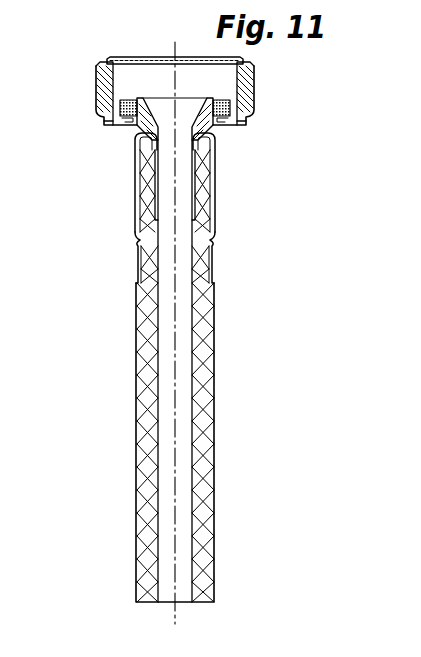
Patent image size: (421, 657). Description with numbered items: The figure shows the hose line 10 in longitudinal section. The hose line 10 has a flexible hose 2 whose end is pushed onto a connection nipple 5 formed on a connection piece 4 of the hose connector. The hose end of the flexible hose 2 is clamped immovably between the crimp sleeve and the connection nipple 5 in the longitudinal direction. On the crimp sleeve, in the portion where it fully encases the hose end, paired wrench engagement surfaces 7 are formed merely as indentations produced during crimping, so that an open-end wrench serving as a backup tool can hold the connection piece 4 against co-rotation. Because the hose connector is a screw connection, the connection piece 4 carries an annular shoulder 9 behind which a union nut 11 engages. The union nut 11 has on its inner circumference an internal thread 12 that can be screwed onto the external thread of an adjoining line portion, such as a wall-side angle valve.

The flexible hose 2 is at (205, 410).
The connection piece 4 is at (205, 164).
The connection nipple 5 is at (149, 167).
The wrench engagement surfaces 7 is at (219, 263).
The annular shoulder 9 is at (123, 134).
The hose line 10 is at (283, 277).
The union nut 11 is at (237, 121).
The internal thread 12 is at (128, 78).